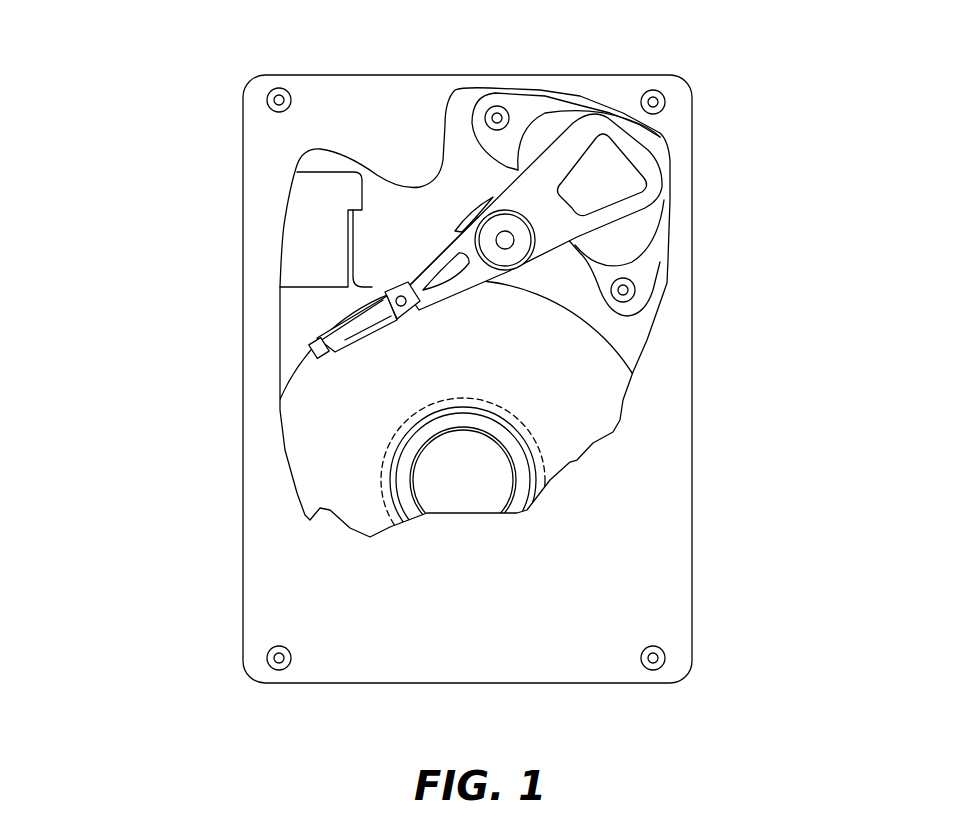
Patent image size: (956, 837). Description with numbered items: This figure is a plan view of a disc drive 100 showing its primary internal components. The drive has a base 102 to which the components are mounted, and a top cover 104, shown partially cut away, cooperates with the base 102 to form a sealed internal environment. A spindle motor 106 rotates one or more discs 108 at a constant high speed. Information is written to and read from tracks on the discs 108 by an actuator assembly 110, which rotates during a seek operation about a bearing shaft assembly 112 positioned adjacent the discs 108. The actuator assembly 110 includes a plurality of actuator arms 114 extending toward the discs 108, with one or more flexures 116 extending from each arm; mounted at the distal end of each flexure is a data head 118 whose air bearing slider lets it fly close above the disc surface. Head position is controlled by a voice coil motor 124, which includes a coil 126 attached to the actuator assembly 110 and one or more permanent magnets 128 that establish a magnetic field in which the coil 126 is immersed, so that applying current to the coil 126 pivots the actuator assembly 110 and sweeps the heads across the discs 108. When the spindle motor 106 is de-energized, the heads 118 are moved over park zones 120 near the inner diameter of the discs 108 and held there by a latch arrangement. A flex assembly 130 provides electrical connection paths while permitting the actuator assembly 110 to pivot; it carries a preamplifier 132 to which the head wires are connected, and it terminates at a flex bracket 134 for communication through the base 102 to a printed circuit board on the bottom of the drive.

The disc drive 100 is at (222, 67).
The base 102 is at (307, 320).
The top cover 104 is at (291, 578).
The spindle motor 106 is at (461, 487).
The discs 108 is at (581, 427).
The actuator assembly 110 is at (487, 290).
The bearing shaft assembly 112 is at (508, 241).
The actuator arms 114 is at (453, 295).
The flexures 116 is at (345, 338).
The data head 118 is at (318, 355).
The park zones 120 is at (378, 488).
The voice coil motor 124 is at (555, 120).
The coil 126 is at (655, 179).
The permanent magnets 128 is at (527, 138).
The flex assembly 130 is at (435, 245).
The preamplifier 132 is at (475, 207).
The flex bracket 134 is at (310, 218).